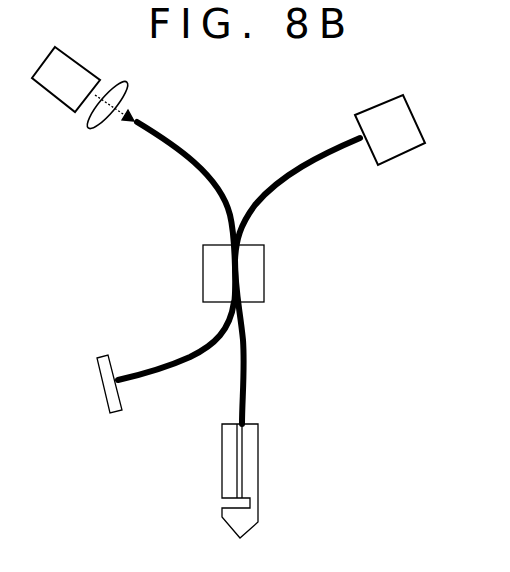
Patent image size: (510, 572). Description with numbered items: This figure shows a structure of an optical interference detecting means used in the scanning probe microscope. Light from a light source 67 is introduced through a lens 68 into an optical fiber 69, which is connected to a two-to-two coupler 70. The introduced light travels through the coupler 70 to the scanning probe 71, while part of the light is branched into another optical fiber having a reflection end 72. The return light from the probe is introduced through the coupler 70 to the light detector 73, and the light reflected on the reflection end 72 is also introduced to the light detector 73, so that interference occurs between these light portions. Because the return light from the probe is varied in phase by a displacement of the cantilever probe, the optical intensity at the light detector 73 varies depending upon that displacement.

The light source 67 is at (61, 87).
The lens 68 is at (100, 115).
The optical fiber 69 is at (185, 147).
The 2-to-2 coupler 70 is at (238, 270).
The scanning probe 71 is at (252, 440).
The reflection end 72 is at (113, 398).
The light detector 73 is at (373, 110).